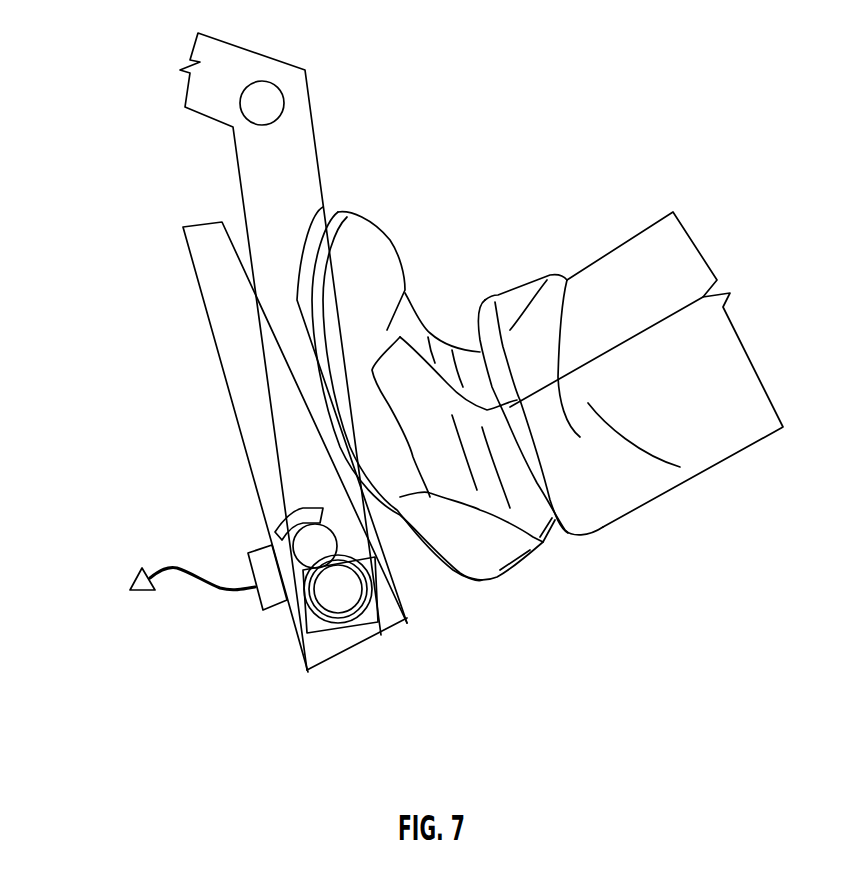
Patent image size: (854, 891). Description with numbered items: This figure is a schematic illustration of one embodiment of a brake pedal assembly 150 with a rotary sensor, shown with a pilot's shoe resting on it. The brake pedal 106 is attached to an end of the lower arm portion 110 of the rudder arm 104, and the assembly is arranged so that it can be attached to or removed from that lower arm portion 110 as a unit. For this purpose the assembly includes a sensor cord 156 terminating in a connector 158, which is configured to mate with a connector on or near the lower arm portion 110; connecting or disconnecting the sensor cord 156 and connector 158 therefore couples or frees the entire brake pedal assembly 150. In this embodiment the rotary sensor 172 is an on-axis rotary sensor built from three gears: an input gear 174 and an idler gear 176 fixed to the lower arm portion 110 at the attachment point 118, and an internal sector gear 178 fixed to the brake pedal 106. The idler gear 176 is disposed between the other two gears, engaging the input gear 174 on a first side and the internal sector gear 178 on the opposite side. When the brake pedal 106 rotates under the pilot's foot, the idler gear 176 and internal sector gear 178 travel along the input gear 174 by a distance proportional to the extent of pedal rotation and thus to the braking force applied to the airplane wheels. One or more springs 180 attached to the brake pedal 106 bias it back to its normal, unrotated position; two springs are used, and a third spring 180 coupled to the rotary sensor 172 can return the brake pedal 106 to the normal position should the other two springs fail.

The rudder arm 104 is at (308, 95).
The brake pedal 106 is at (220, 354).
The lower arm portion 110 is at (323, 192).
The attachment point 118 is at (362, 648).
The brake pedal assembly 150 is at (160, 217).
The sensor cord 156 is at (170, 568).
The connector 158 is at (132, 597).
The rotary sensor 172 is at (307, 624).
The input gear 174 is at (339, 627).
The idler gear 176 is at (407, 623).
The internal sector gear 178 is at (296, 518).
The spring 180 is at (304, 666).